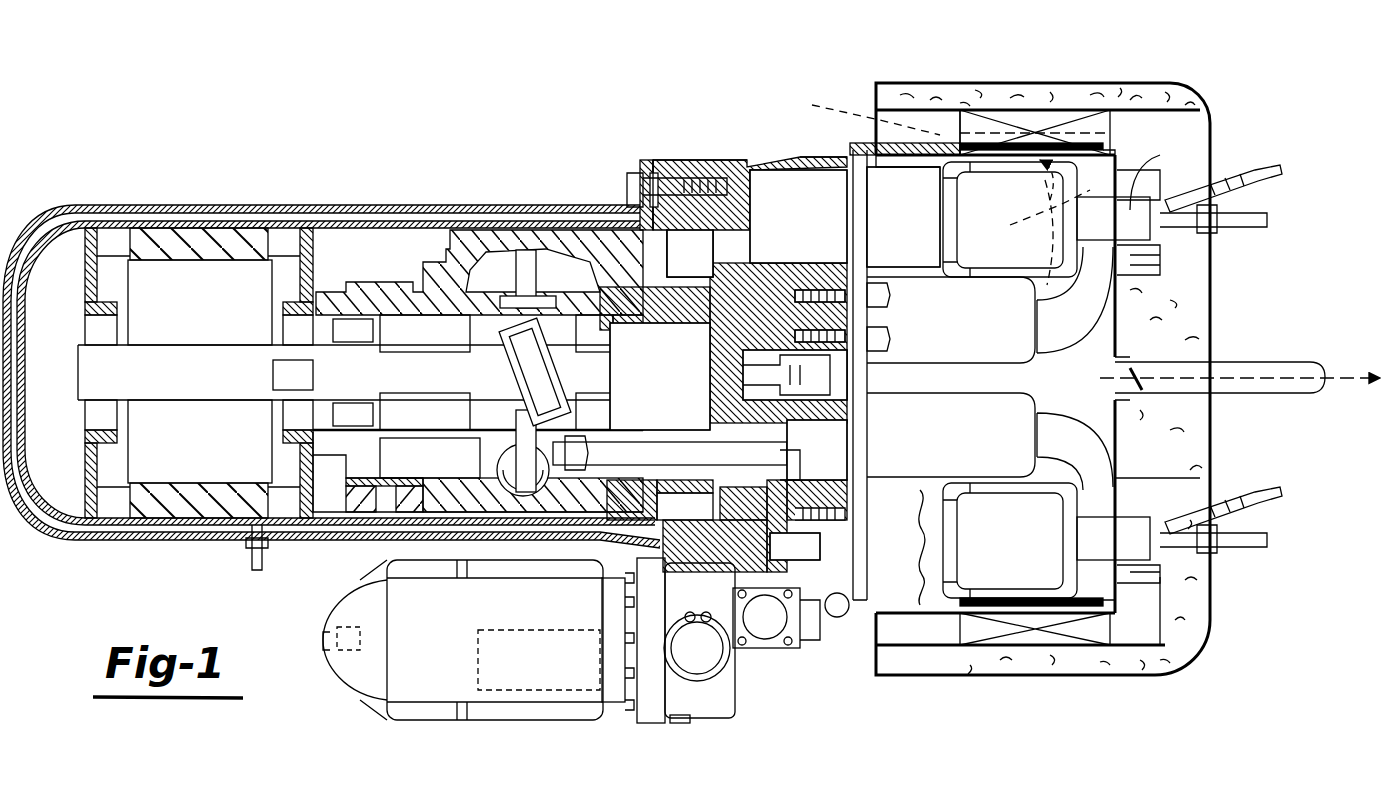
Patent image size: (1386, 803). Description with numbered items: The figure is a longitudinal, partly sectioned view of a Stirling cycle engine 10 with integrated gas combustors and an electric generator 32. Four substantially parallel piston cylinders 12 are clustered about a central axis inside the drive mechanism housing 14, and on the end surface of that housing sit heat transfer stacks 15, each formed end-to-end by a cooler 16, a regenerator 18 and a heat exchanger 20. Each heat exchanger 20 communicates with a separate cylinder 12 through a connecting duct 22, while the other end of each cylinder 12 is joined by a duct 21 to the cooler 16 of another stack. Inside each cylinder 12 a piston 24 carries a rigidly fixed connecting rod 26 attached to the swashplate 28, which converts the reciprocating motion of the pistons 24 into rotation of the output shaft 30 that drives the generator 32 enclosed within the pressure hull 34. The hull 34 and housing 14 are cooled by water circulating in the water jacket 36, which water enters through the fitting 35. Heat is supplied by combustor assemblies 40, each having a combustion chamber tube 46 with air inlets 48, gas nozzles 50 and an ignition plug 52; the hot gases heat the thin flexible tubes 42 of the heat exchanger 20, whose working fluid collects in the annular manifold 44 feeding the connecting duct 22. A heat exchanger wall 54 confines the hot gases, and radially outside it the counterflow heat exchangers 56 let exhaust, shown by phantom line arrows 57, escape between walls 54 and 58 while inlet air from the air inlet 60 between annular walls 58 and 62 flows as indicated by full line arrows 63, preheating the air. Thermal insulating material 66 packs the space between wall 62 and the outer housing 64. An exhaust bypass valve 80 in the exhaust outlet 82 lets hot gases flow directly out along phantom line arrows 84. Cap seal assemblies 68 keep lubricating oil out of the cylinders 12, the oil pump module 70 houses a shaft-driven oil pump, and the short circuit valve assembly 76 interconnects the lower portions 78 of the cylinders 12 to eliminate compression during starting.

The Stirling cycle engine 10 is at (705, 160).
The piston cylinders 12 is at (954, 342).
The drive mechanism housing 14 is at (803, 207).
The heat transfer stacks 15 is at (882, 132).
The cooler 16 is at (796, 168).
The regenerator 18 is at (890, 237).
The heat exchanger 20 is at (1022, 140).
The duct 21 is at (740, 272).
The connecting ducts 22 is at (1130, 330).
The piston 24 is at (823, 578).
The connecting rod 26 is at (727, 470).
The swashplate 28 is at (515, 330).
The output shaft 30 is at (426, 362).
The electric generator 32 is at (357, 245).
The pressure hull 34 is at (322, 207).
The fitting 35 is at (248, 548).
The water jacket 36 is at (540, 221).
The combustor assemblies 40 is at (1170, 265).
The tubes 42 is at (1072, 150).
The annular manifold 44 is at (1140, 200).
The combustion chamber tube 46 is at (1165, 170).
The air inlets 48 is at (1113, 378).
The gas nozzles 50 is at (1200, 228).
The ignition plug 52 is at (1272, 180).
The heat exchanger wall 54 is at (997, 702).
The counterflow heat exchangers 56 is at (1000, 106).
The phantom line arrows 57 is at (808, 108).
The wall 58 is at (920, 108).
The air inlet 60 is at (955, 95).
The annular wall 62 is at (1048, 138).
The full line arrows 63 is at (1200, 140).
The outer housing 64 is at (1125, 180).
The thermal insulating material 66 is at (1200, 480).
The cap seal assemblies 68 is at (755, 560).
The oil pump module 70 is at (662, 335).
The short circuit valve assembly 76 is at (848, 445).
The lower portions 78 is at (845, 410).
The exhaust bypass valve 80 is at (1116, 385).
The exhaust outlet 82 is at (1308, 362).
The phantom line arrows 84 is at (1070, 335).